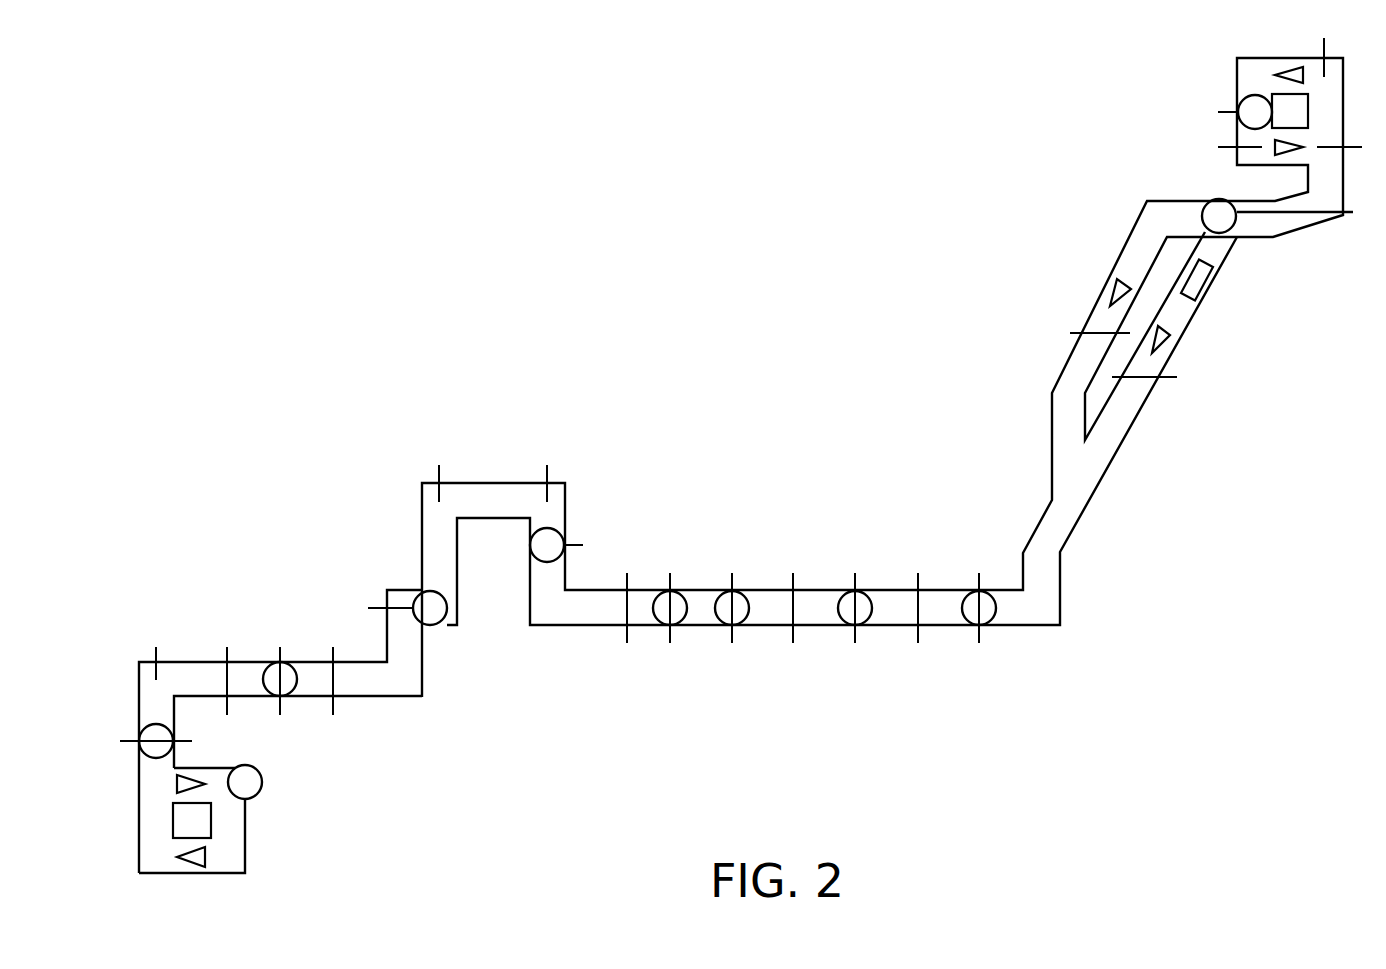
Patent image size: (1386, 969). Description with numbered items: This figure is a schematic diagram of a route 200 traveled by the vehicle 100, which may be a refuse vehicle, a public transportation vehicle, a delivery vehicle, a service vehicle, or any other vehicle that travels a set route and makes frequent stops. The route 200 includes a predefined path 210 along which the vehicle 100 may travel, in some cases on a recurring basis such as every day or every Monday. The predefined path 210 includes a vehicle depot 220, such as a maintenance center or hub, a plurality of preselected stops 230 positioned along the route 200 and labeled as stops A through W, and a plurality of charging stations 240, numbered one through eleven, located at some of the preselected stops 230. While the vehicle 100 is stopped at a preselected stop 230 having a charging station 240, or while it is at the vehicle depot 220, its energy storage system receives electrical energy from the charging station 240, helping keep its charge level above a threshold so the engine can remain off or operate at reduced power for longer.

The vehicle 100 is at (1207, 288).
The route 200 is at (398, 142).
The predefined path 210 is at (493, 492).
The vehicle depot 220 is at (110, 876).
The preselected stops 230 is at (335, 687).
The charging stations 240 is at (272, 662).